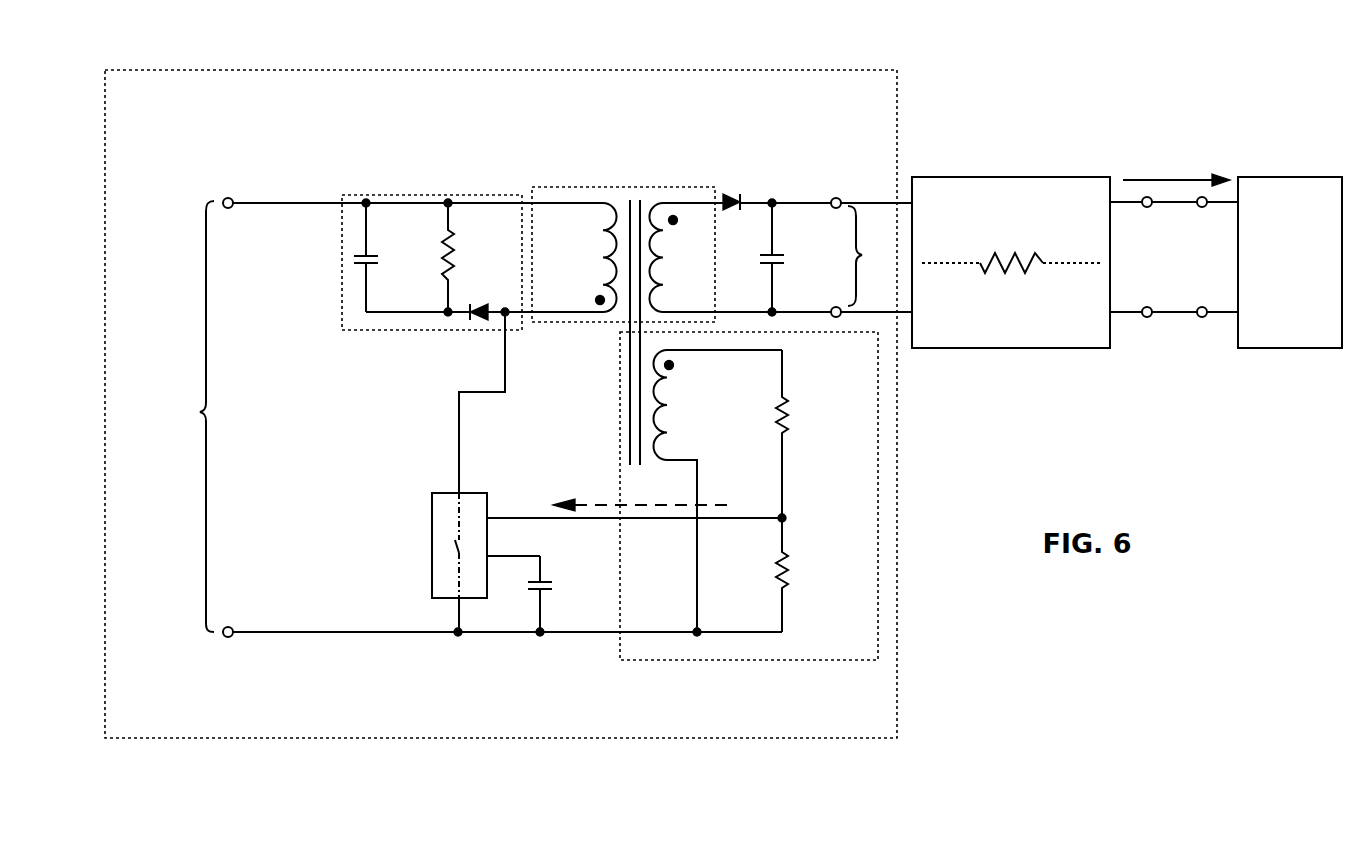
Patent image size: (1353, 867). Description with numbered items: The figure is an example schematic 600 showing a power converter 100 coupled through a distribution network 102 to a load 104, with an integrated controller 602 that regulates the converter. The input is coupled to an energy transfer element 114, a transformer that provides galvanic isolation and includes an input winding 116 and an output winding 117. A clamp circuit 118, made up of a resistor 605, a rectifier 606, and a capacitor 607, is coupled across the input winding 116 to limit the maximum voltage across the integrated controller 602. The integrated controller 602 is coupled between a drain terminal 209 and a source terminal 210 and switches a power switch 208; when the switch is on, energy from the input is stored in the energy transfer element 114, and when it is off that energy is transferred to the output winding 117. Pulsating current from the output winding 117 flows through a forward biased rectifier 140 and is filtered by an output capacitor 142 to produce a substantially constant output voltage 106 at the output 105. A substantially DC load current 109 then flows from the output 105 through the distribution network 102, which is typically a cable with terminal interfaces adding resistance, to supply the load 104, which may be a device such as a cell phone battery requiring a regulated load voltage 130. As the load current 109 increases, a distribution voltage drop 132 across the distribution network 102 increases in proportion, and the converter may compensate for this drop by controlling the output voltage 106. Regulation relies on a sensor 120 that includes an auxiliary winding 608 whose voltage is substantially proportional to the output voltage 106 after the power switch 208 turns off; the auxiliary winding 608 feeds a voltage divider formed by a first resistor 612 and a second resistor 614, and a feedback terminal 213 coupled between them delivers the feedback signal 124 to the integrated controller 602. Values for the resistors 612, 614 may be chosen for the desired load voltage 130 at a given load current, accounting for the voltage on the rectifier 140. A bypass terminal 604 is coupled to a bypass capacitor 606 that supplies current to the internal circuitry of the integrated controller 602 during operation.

The schematic 600 is at (615, 16).
The power converter 100 is at (505, 112).
The output 105 is at (529, 416).
The clamp circuit 118 is at (420, 192).
The capacitor 607 is at (378, 253).
The resistor 605 is at (434, 257).
The rectifier / bypass capacitor 606 is at (480, 301).
The energy transfer element 114 is at (585, 185).
The input winding 116 is at (599, 242).
The output winding 117 is at (666, 261).
The rectifier 140 is at (734, 186).
The output voltage 106 is at (810, 250).
The output capacitor 142 is at (765, 259).
The distribution network 102 is at (1006, 179).
The distribution voltage drop 132 is at (1012, 310).
The load current 109 is at (1172, 147).
The load voltage 130 is at (1189, 263).
The load 104 is at (1282, 352).
The integrated controller 602 is at (428, 556).
The power switch 208 is at (449, 537).
The drain terminal 209 is at (440, 477).
The source terminal 210 is at (447, 617).
The feedback terminal 213 is at (505, 500).
The bypass terminal 604 is at (527, 548).
The feedback signal 124 is at (637, 513).
The sensor 120 is at (735, 668).
The auxiliary winding 608 is at (668, 390).
The first resistor 612 is at (790, 421).
The second resistor 614 is at (790, 579).